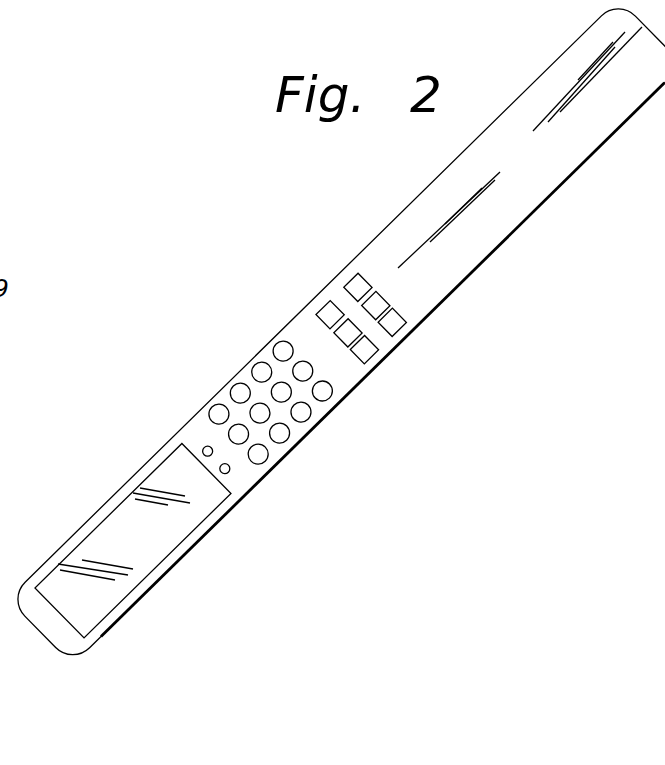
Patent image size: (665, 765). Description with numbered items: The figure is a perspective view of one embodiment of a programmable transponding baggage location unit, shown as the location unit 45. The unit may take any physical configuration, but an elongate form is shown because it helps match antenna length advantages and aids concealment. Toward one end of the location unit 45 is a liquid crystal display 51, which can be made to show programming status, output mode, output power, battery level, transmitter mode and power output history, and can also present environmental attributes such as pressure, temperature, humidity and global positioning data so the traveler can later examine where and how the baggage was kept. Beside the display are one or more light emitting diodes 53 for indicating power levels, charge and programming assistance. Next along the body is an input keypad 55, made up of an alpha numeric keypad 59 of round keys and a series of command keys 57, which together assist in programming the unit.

The location unit 45 is at (125, 630).
The liquid crystal display 51 is at (163, 538).
The light emitting diodes 53 is at (213, 453).
The input keypad 55 is at (312, 366).
The command keys 57 is at (380, 334).
The alpha numeric keypad 59 is at (281, 413).